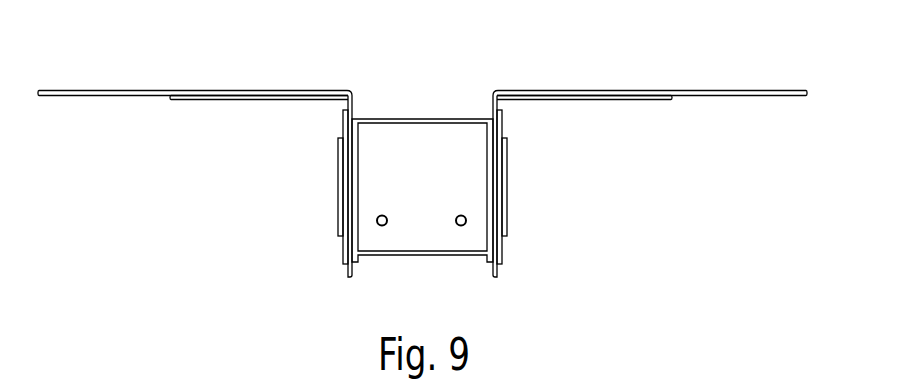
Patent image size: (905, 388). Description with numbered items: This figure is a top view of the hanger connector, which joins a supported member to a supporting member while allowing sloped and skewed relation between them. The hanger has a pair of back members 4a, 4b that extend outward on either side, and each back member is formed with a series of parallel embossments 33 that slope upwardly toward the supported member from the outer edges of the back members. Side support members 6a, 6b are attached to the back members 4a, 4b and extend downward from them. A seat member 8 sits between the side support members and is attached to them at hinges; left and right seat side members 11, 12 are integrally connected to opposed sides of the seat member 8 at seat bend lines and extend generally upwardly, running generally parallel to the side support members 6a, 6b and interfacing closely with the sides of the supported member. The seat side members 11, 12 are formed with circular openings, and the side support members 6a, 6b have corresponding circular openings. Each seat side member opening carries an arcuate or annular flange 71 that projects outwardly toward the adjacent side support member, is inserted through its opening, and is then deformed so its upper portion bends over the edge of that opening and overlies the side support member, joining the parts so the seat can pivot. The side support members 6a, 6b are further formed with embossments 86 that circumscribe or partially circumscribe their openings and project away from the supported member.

The back member 4a is at (137, 90).
The back member 4b is at (700, 90).
The embossments 33 is at (197, 100).
The seat member 8 is at (398, 119).
The left seat side member 11 is at (353, 114).
The right seat side member 12 is at (490, 116).
The side support member 6a is at (348, 274).
The side support member 6b is at (497, 274).
The embossment 86 is at (344, 125).
The annular flange 71 is at (338, 198).